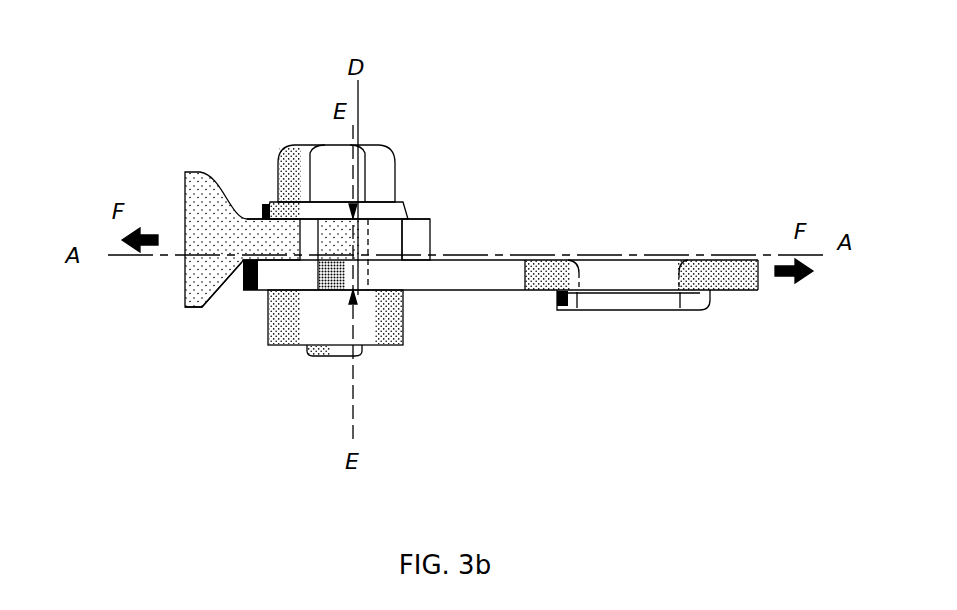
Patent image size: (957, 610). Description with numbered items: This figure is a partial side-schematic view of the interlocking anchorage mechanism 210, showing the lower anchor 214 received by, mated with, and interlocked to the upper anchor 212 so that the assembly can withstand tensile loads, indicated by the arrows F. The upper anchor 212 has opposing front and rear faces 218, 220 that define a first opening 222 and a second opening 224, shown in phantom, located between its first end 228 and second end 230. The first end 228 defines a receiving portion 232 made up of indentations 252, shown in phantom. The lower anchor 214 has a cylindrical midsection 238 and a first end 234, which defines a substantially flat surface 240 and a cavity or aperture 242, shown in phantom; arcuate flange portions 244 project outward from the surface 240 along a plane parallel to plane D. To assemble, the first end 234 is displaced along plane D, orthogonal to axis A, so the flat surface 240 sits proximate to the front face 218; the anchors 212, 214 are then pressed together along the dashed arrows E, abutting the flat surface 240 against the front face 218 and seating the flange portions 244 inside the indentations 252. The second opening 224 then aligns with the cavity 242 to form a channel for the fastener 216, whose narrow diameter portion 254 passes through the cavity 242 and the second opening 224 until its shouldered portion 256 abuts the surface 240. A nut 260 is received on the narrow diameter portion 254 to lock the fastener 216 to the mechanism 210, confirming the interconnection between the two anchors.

The interlocking anchorage mechanism 210 is at (736, 432).
The upper anchor 212 is at (610, 426).
The lower anchor 214 is at (205, 403).
The fastener 216 is at (320, 160).
The front face 218 is at (737, 248).
The rear face 220 is at (737, 303).
The first opening 222 is at (680, 297).
The second opening 224 is at (270, 307).
The first end 228 is at (232, 275).
The second end 230 is at (774, 288).
The receiving portion 232 is at (426, 313).
The first end 234 is at (444, 239).
The cylindrical midsection 238 is at (194, 287).
The substantially flat surface 240 is at (543, 262).
The cavity or aperture 242 is at (303, 250).
The arcuate flange portions 244 is at (408, 218).
The indentations 252 is at (330, 262).
The narrow diameter portion 254 is at (333, 357).
The shouldered portion 256 is at (265, 212).
The nut 260 is at (390, 347).